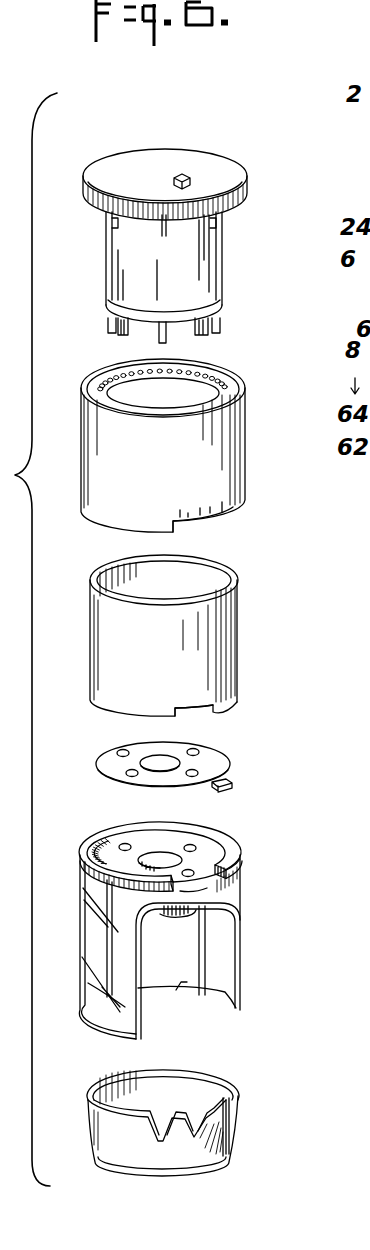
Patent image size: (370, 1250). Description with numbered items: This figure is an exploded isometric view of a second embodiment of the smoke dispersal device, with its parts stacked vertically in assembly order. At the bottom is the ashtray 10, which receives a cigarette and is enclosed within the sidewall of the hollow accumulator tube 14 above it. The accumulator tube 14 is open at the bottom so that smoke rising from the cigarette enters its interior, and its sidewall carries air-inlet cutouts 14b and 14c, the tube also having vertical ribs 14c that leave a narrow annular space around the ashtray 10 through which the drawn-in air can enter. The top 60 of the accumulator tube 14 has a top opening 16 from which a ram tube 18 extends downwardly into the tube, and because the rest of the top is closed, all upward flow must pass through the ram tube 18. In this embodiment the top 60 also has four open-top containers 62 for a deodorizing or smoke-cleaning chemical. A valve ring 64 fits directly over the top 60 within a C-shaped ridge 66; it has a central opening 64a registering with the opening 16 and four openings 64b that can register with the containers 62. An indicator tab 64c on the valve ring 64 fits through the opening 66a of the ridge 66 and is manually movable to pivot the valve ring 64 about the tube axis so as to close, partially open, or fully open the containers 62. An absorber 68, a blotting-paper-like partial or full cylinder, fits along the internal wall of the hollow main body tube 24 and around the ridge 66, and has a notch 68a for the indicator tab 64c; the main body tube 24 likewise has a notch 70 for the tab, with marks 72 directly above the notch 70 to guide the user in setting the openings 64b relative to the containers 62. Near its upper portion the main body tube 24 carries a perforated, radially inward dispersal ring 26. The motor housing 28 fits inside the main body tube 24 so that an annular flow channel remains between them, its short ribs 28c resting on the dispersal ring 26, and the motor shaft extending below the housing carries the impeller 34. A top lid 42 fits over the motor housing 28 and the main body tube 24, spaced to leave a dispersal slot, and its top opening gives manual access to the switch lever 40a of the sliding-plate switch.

The ashtray 10 is at (227, 1138).
The accumulator tube 14 is at (243, 940).
The cutout 14b is at (130, 990).
The cutout 14c is at (210, 977).
The top opening 16 is at (160, 858).
The ram tube 18 is at (164, 922).
The main body tube 24 is at (233, 447).
The dispersal ring 26 is at (203, 375).
The motor housing 28 is at (217, 267).
The short ribs 28c is at (215, 227).
The impeller 34 is at (227, 318).
The switch lever 40a is at (181, 173).
The top lid 42 is at (247, 197).
The top of the accumulator tube 60 is at (150, 842).
The open-top containers 62 is at (126, 845).
The valve ring 64 is at (217, 760).
The disc central hole 64a is at (162, 762).
The openings 64b is at (130, 775).
The indicator tab 64c is at (230, 787).
The C-shaped ridge 66 is at (227, 835).
The opening 66a is at (198, 893).
The absorber 68 is at (225, 622).
The notch 68a is at (214, 713).
The notch 70 is at (212, 520).
The marks 72 is at (224, 494).